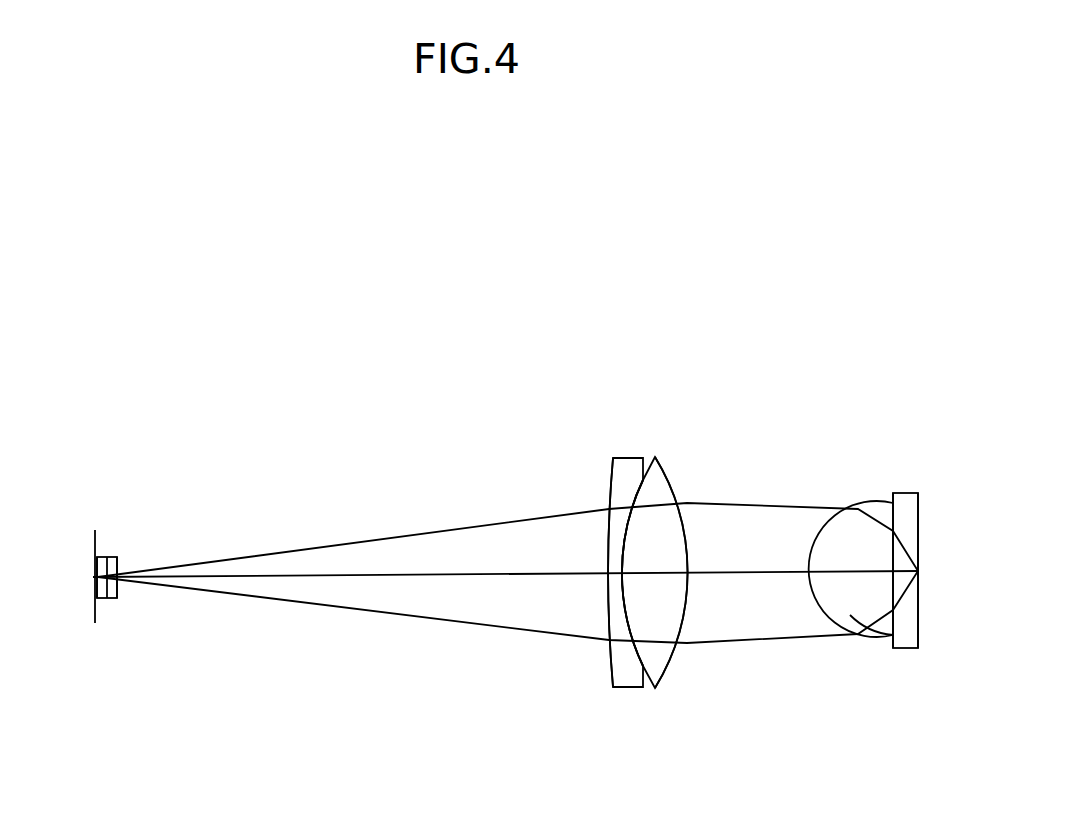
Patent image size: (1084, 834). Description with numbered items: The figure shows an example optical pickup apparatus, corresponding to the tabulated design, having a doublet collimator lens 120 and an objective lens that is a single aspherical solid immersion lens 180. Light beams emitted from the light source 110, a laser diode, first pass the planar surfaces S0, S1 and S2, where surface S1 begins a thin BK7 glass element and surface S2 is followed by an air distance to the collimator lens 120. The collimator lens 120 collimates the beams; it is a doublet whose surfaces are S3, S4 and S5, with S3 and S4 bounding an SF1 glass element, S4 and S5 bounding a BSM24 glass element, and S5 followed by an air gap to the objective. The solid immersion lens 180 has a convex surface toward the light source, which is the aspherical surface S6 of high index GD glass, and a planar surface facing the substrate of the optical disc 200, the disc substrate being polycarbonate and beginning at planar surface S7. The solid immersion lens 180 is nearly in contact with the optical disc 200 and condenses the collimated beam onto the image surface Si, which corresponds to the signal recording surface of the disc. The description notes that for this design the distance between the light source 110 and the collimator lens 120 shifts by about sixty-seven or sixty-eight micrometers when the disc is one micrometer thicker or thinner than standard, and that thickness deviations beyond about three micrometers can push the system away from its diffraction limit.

The light source 110 is at (117, 539).
The collimator lens 120 is at (648, 440).
The solid immersion lens 180 is at (870, 510).
The optical disc 200 is at (907, 490).
The surface s0 S0 is at (93, 592).
The surface s1 S1 is at (102, 599).
The surface s2 S2 is at (114, 599).
The surface s3 S3 is at (612, 667).
The surface s4 S4 is at (636, 672).
The surface s5 S5 is at (665, 677).
The surface s6 S6 is at (873, 641).
The surface s7 S7 is at (893, 630).
The image surface Si is at (918, 634).